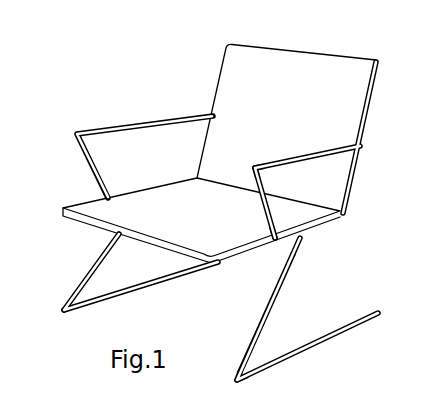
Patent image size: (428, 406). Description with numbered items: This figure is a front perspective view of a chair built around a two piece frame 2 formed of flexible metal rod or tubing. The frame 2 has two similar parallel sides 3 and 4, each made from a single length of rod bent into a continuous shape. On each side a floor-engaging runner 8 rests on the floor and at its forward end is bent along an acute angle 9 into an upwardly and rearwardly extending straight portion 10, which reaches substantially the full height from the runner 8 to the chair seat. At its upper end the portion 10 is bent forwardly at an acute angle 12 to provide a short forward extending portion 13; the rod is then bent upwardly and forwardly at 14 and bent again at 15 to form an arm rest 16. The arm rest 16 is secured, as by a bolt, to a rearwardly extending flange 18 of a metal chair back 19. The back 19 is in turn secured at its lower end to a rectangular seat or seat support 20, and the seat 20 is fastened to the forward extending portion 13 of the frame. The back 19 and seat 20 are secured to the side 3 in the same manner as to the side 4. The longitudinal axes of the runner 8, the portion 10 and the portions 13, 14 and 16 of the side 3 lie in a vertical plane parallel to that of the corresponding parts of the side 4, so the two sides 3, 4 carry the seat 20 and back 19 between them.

The two piece frame 2 is at (209, 202).
The side 3 is at (143, 108).
The side 4 is at (292, 309).
The floor-engaging runner 8 is at (153, 287).
The acute angle 9 is at (243, 372).
The upwardly and rearwardly extending straight portion 10 is at (274, 304).
The acute angle 12 is at (293, 245).
The short forward extending portion 13 is at (289, 233).
The bend 14 is at (267, 221).
The bend 15 is at (263, 178).
The arm rest 16 is at (303, 155).
The rearwardly extending flange 18 is at (370, 108).
The metal chair back 19 is at (312, 76).
The seat or seat support 20 is at (178, 224).